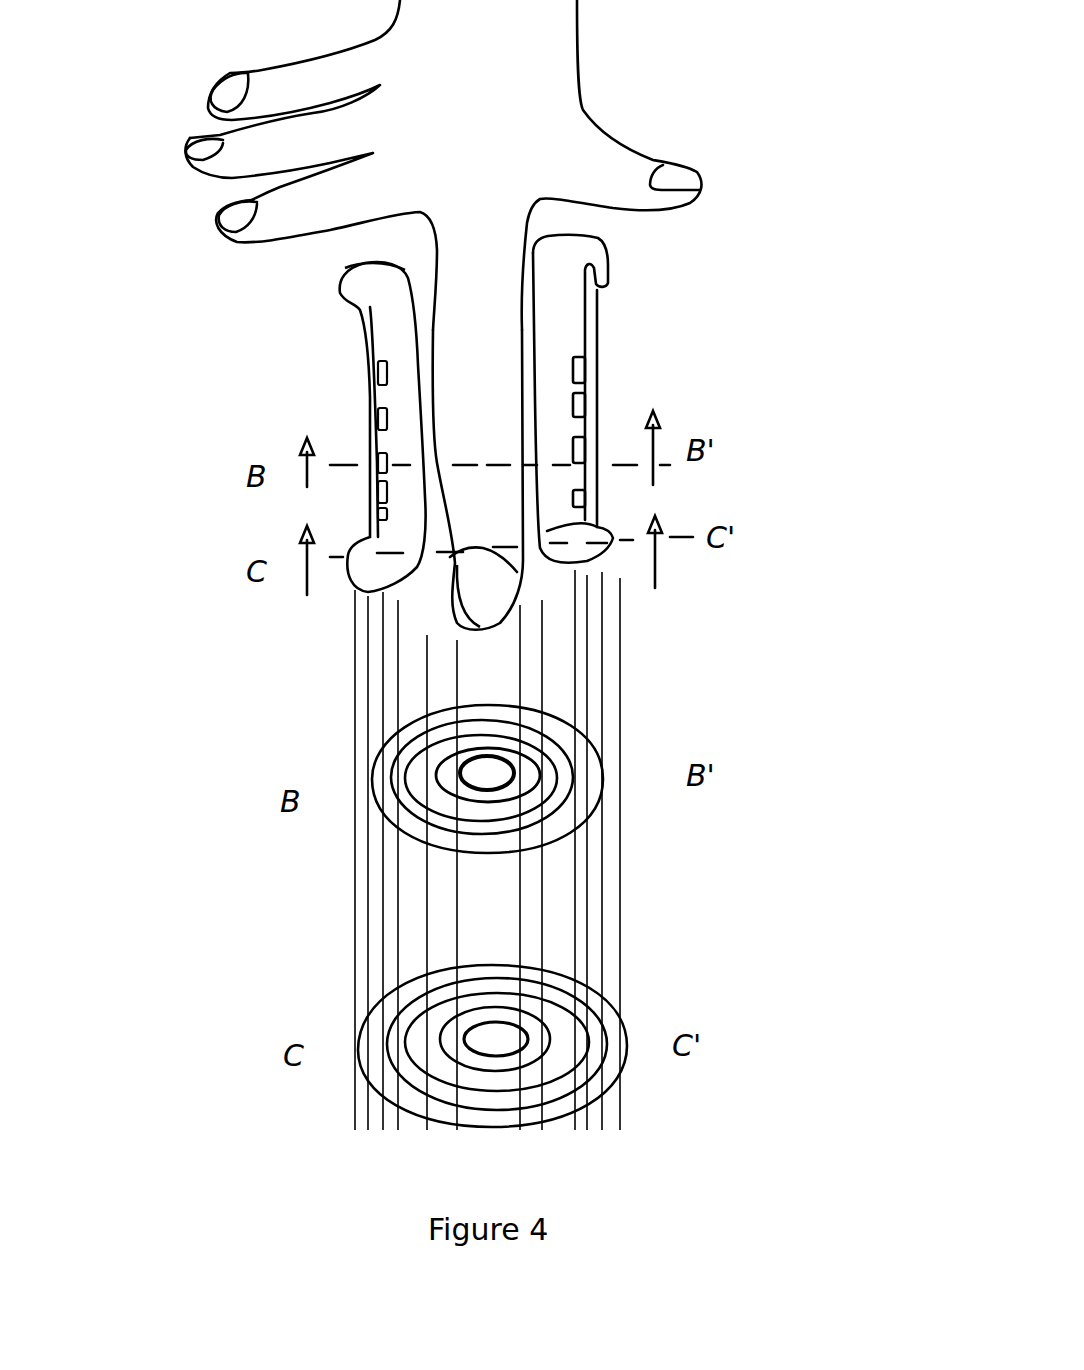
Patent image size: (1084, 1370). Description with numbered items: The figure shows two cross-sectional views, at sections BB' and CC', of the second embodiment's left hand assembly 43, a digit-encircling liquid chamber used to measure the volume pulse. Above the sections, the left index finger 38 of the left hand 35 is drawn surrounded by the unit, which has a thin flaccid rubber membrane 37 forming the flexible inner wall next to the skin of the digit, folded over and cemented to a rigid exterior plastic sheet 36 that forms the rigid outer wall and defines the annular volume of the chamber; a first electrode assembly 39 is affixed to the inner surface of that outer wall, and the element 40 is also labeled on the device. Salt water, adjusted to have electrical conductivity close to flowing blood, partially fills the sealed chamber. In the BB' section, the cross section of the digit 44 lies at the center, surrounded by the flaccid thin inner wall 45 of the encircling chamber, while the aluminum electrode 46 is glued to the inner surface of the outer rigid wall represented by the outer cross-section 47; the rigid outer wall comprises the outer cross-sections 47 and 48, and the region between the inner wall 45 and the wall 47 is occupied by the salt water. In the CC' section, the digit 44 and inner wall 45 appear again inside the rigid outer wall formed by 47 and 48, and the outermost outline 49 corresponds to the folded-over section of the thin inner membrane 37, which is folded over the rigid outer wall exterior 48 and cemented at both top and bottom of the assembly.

The left hand 35 is at (447, 196).
The rigid exterior plastic sheet 36 is at (360, 347).
The thin flaccid rubber membrane 37 is at (362, 265).
The left index finger 38 is at (490, 510).
The first electrode assembly 39 is at (580, 358).
The sensor elements 40 is at (420, 401).
The left hand assembly 43 is at (337, 588).
The cross section of the digit 44 is at (488, 764).
The flaccid thin inner wall 45 is at (543, 777).
The aluminum electrode 46 is at (560, 790).
The outer cross-section of the rigid outer wall 47 is at (558, 818).
The rigid outer wall exterior 48 is at (557, 845).
The outermost outline 49 is at (570, 1113).